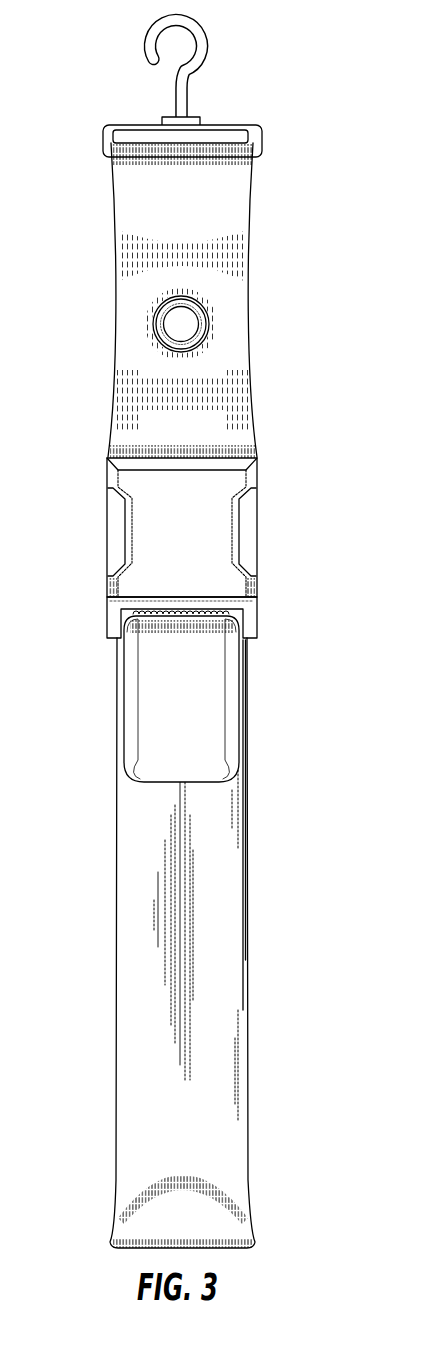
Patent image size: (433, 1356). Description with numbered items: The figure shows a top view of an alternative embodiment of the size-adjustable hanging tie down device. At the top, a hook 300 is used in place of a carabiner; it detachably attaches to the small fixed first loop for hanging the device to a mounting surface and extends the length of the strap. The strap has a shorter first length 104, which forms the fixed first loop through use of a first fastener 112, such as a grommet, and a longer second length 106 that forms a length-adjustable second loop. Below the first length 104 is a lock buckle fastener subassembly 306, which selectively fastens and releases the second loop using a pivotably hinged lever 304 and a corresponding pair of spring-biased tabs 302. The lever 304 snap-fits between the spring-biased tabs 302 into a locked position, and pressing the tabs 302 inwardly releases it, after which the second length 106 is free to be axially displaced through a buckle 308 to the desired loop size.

The hook 300 is at (143, 36).
The first length 104 is at (272, 143).
The first fastener 112 is at (163, 327).
The lock buckle fastener subassembly 306 is at (275, 524).
The spring-biased tabs 302 is at (112, 525).
The buckle 308 is at (245, 603).
The second length 106 is at (278, 1238).
The lever 304 is at (152, 738).